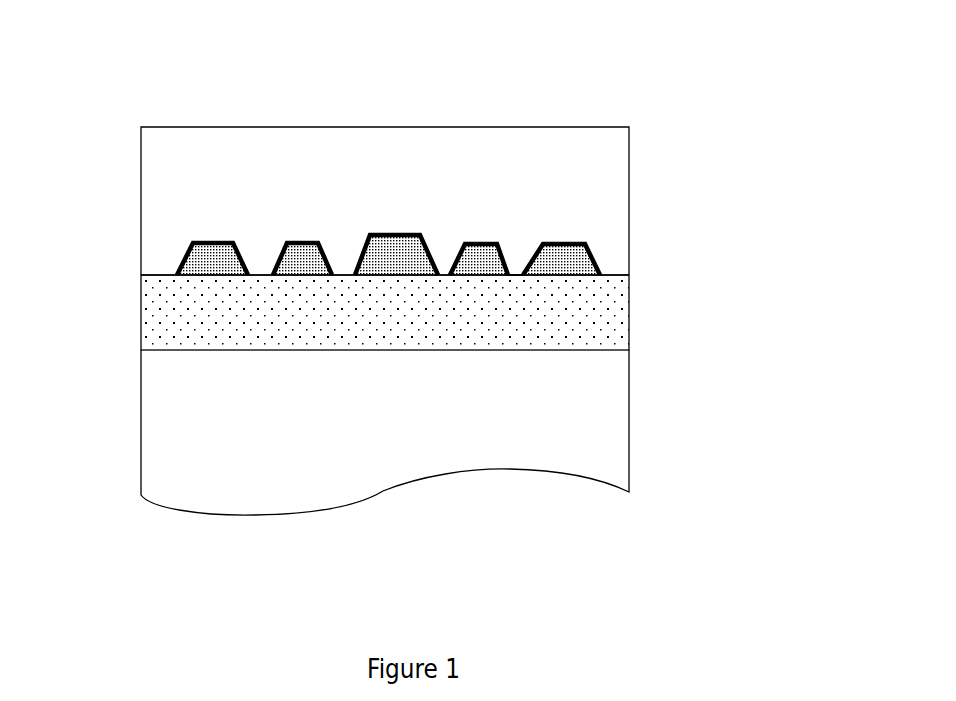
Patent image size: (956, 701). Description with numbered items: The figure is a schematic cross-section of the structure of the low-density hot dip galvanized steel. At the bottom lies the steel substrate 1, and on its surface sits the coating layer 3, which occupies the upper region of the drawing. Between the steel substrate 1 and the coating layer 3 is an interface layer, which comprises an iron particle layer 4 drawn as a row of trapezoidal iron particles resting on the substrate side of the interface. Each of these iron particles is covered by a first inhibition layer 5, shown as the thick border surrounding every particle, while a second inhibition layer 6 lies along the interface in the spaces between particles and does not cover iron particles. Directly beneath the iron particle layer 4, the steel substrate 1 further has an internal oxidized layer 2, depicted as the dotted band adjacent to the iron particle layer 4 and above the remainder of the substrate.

The steel substrate 1 is at (220, 418).
The internal oxidized layer 2 is at (190, 313).
The coating layer 3 is at (177, 210).
The iron particle layer 4 is at (562, 262).
The first inhibition layer 5 is at (588, 253).
The second inhibition layer 6 is at (522, 274).